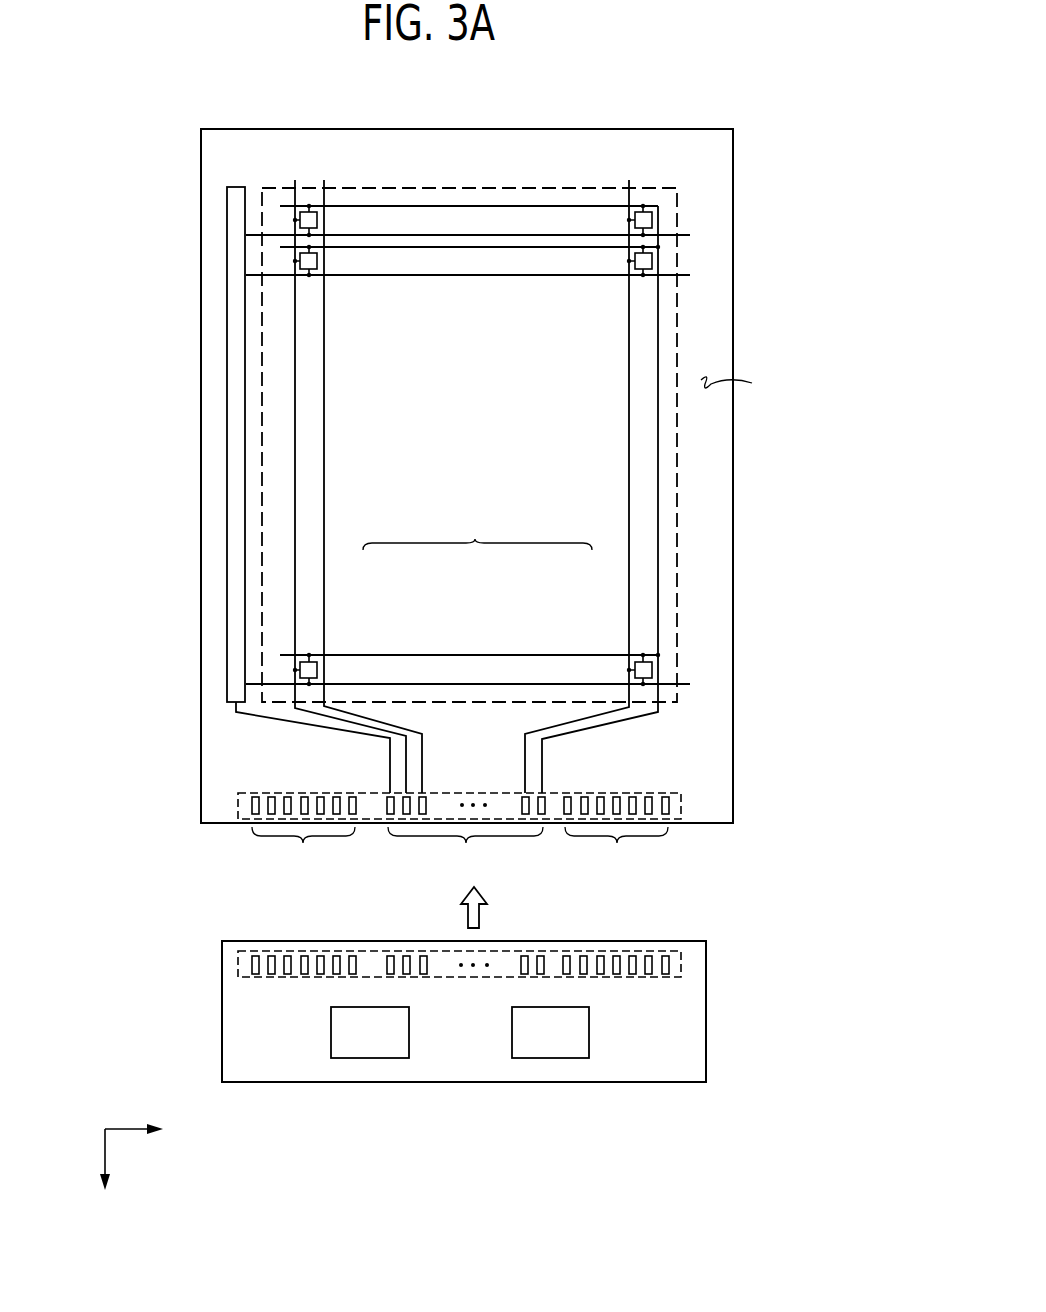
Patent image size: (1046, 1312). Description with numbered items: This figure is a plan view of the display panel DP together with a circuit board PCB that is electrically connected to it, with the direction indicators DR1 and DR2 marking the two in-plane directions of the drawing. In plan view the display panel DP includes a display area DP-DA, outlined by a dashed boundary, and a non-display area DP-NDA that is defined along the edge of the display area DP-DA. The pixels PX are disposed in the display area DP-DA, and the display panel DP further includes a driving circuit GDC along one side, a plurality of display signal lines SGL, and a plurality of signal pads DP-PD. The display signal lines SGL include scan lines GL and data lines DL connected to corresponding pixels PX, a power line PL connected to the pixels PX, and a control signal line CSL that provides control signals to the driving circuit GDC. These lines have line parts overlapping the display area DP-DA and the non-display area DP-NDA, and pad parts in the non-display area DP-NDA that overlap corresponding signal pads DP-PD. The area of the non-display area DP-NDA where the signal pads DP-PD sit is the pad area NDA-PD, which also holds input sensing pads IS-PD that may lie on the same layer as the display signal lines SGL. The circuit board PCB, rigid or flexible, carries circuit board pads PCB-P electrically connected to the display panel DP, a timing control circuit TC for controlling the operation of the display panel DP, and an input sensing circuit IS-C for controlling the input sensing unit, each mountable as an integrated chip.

The display panel DP is at (666, 129).
The display area DP-DA is at (677, 310).
The non-display area DP-NDA is at (766, 383).
The driving circuit GDC is at (233, 386).
The pixels PX is at (297, 668).
The display signal lines SGL is at (477, 528).
The data lines DL is at (326, 570).
The control signal line CSL is at (312, 724).
The scan lines GL is at (473, 684).
The power line PL is at (657, 562).
The pad area NDA-PD is at (681, 805).
The signal pads DP-PD is at (466, 835).
The input sensing pads IS-PD is at (460, 835).
The circuit board PCB is at (222, 1012).
The circuit board pads PCB-P is at (681, 963).
The timing control circuit TC is at (368, 1058).
The input sensing circuit IS-C is at (550, 1058).
The first direction DR1 is at (105, 1175).
The second direction DR2 is at (156, 1128).